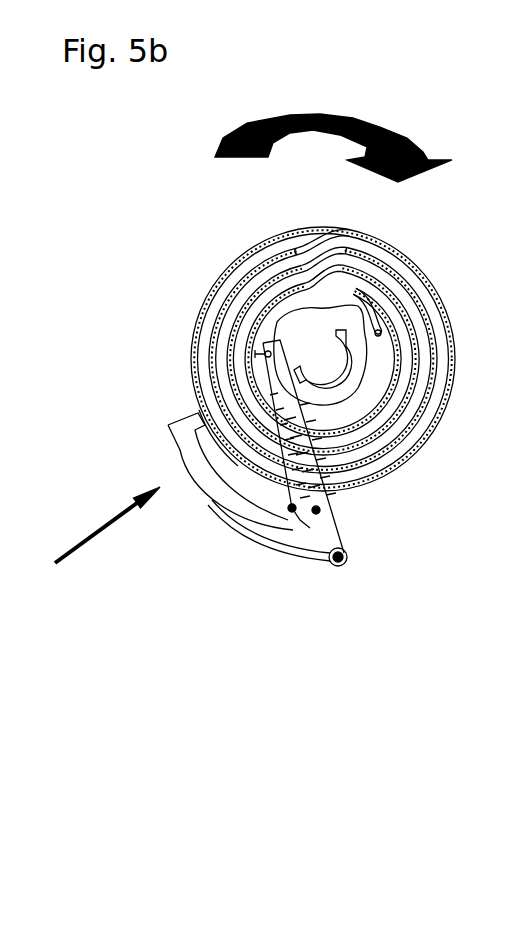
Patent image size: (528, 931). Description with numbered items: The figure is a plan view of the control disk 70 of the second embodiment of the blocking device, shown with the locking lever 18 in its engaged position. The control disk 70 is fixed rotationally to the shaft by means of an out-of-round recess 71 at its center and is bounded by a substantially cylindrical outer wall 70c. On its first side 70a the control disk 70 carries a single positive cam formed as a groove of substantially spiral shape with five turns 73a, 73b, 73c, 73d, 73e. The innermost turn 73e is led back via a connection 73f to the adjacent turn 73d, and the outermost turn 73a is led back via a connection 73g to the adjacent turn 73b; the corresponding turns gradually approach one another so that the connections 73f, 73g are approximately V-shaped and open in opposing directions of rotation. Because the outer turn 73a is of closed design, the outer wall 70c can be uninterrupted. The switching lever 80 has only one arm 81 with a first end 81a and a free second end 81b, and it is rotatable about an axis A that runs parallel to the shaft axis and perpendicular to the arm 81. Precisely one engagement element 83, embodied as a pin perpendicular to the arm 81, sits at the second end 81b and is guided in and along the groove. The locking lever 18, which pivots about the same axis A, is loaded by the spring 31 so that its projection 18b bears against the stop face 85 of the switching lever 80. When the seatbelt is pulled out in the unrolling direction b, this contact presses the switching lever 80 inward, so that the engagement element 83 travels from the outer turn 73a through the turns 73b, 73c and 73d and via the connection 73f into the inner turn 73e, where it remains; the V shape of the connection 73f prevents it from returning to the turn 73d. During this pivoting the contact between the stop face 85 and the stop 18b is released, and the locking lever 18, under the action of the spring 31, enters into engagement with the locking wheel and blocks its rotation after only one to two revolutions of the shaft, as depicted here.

The locking lever 18 is at (184, 450).
The projection 18b is at (284, 521).
The spring 31 is at (350, 560).
The control disk 70 is at (404, 250).
The first side 70a is at (233, 283).
The outer wall 70c is at (187, 391).
The out-of-round recess 71 is at (330, 348).
The outermost turn 73a is at (238, 265).
The turn 73b is at (419, 394).
The turn 73c is at (408, 368).
The turn 73d is at (401, 351).
The innermost turn 73e is at (388, 340).
The connection 73f is at (338, 292).
The connection 73g is at (300, 243).
The switching lever 80 is at (413, 423).
The arm 81 is at (291, 439).
The first end 81a is at (310, 523).
The second end 81b is at (254, 350).
The engagement element 83 is at (257, 359).
The stop face 85 is at (291, 500).
The axis A is at (322, 512).
The unrolling direction b is at (333, 131).